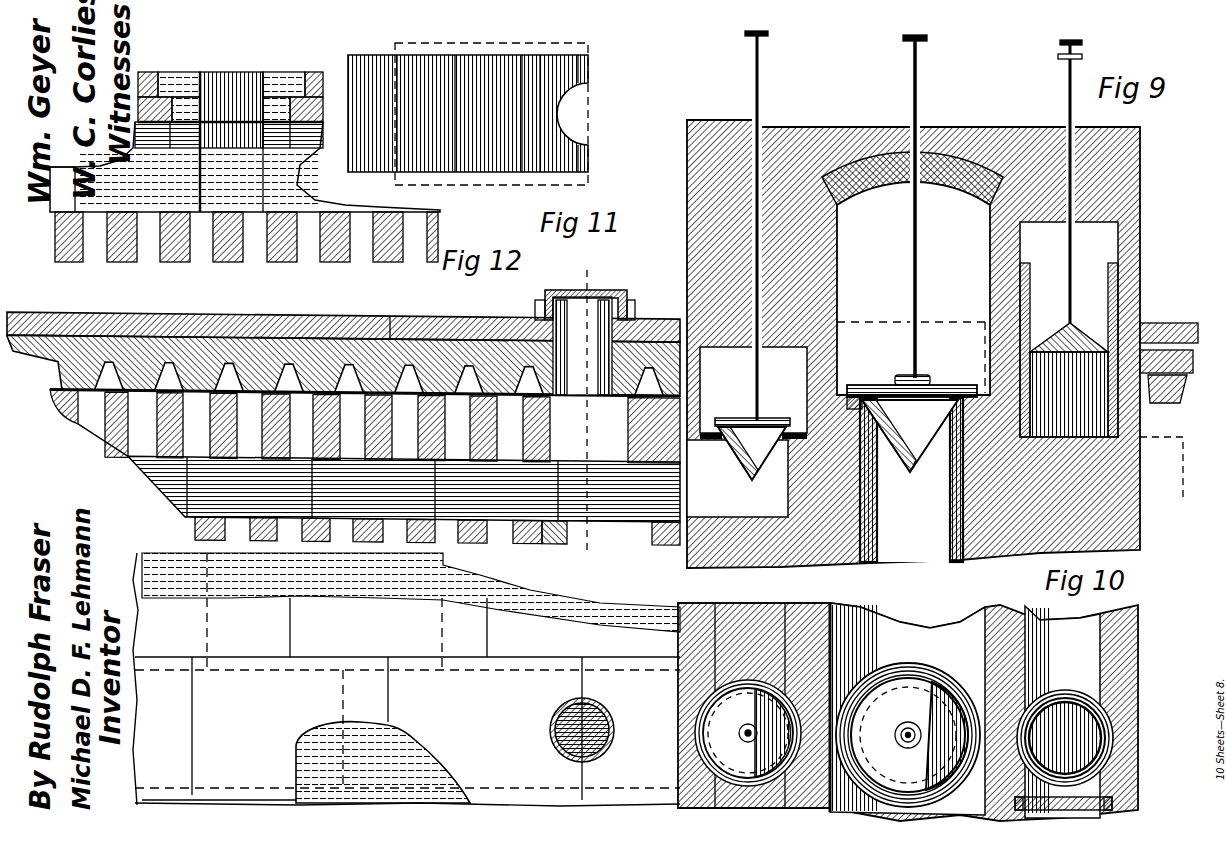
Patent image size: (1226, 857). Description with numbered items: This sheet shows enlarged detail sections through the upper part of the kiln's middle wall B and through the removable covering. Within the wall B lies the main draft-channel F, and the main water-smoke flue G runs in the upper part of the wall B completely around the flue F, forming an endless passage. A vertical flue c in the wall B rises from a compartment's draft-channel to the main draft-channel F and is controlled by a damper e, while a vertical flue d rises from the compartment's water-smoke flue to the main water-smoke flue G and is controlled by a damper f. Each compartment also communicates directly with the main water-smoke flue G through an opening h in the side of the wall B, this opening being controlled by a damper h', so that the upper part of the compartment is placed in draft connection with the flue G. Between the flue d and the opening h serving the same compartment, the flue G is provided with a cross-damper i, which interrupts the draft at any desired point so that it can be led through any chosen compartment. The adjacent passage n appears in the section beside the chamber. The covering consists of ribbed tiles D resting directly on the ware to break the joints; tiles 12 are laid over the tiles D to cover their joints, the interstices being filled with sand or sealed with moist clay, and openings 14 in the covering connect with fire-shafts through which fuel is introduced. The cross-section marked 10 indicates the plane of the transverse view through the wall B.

In FIG. 9, the wall B is at (687, 153).
In FIG. 10, the wall B is at (825, 602).
In FIG. 9, the main draft-channel F is at (912, 273).
In FIG. 10, the main draft-channel F is at (877, 635).
In FIG. 9, the main water-smoke flue G is at (1147, 517).
In FIG. 10, the main water-smoke flue G is at (738, 633).
In FIG. 9, the passage n is at (737, 478).
In FIG. 9, the vertical flue c is at (905, 479).
In FIG. 10, the vertical flue c is at (947, 700).
In FIG. 10, the damper h' is at (693, 746).
In FIG. 10, the opening h is at (700, 720).
In FIG. 9, the damper e is at (918, 82).
In FIG. 10, the damper e is at (903, 732).
In FIG. 9, the cross-damper i is at (1068, 78).
In FIG. 10, the cross-damper i is at (1107, 805).
In FIG. 9, the damper f is at (1082, 57).
In FIG. 10, the vertical flue d is at (1085, 740).
In FIG. 12, the rack plate 10 is at (353, 310).
In FIG. 9, the rack plate 10 is at (1165, 472).
In FIG. 12, the tiles 12 is at (217, 323).
In FIG. 12, the openings 14 is at (600, 330).
In FIG. 11, the covering tiles D is at (505, 173).
In FIG. 12, the covering tiles D is at (425, 357).